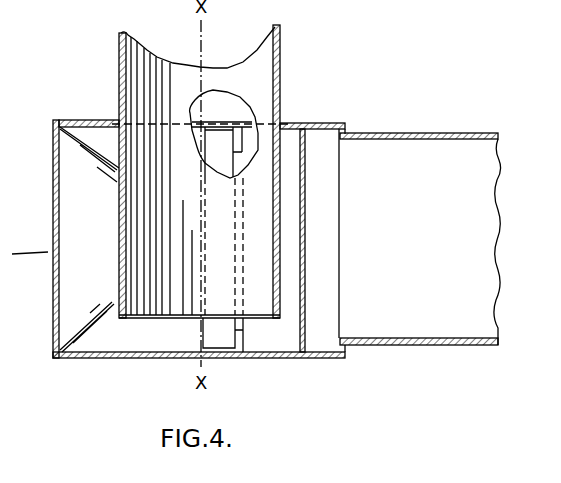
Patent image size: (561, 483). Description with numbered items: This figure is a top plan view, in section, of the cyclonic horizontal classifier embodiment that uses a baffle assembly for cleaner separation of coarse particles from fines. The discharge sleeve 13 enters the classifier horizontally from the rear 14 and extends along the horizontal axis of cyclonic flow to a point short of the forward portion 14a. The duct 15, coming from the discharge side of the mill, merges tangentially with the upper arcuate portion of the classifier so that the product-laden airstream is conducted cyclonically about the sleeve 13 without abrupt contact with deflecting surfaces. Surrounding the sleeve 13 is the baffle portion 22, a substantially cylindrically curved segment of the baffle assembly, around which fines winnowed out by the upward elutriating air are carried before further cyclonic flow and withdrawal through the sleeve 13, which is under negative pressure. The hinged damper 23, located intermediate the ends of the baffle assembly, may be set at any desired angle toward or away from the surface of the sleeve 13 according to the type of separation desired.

The discharge sleeve 13 is at (318, 50).
The rear 14 is at (292, 123).
The forward portion 14a is at (292, 358).
The duct 15 is at (413, 134).
The baffle portion 22 is at (252, 133).
The hinged damper 23 is at (183, 52).